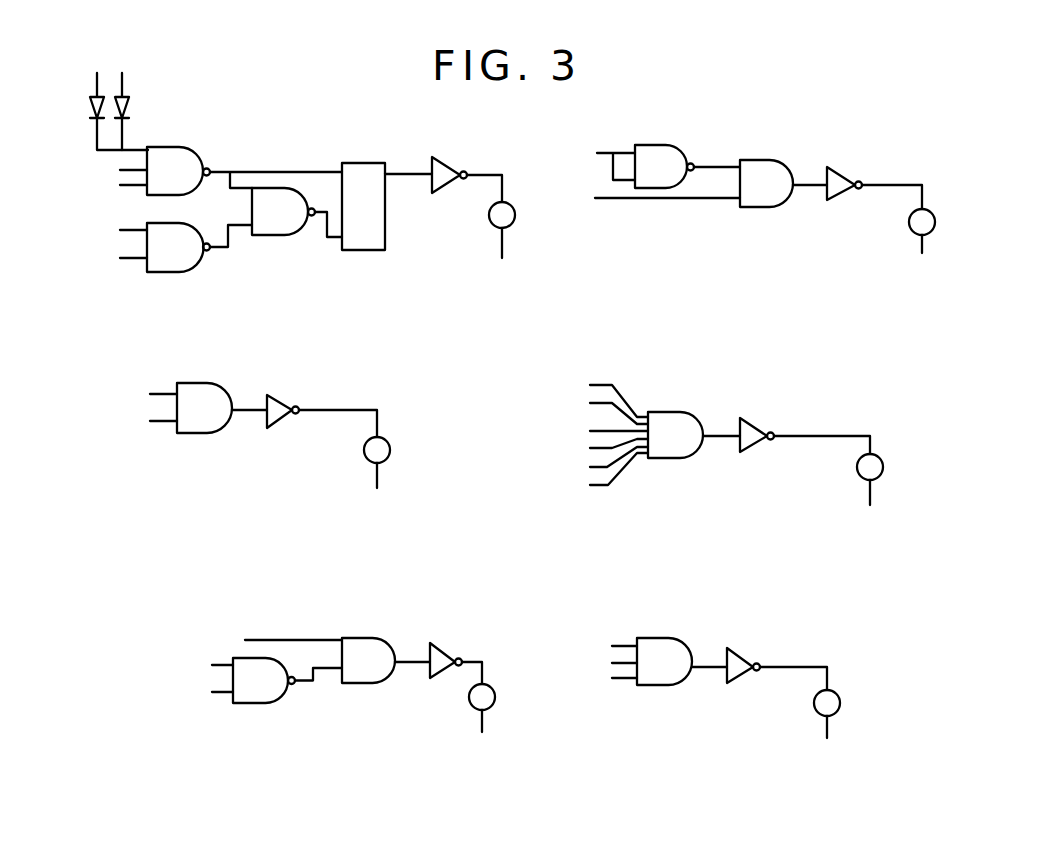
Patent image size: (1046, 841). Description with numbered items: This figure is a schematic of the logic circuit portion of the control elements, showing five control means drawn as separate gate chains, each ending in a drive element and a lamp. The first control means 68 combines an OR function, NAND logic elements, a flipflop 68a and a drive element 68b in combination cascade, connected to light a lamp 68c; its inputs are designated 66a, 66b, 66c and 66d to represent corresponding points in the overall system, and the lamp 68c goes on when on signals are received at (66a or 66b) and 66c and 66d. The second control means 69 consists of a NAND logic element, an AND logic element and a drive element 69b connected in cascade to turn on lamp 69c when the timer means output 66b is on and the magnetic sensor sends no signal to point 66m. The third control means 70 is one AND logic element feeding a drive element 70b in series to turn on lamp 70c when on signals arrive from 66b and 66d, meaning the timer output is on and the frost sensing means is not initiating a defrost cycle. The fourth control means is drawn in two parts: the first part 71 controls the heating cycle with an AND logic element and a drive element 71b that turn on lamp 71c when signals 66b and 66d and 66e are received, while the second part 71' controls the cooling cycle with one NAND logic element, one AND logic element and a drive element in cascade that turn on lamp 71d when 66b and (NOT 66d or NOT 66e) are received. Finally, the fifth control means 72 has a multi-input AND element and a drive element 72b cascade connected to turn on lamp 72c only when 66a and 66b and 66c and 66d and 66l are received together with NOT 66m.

The input point 66a is at (361, 242).
The timer means output 66b is at (410, 349).
The input point 66c is at (364, 315).
The input point 66d is at (364, 424).
The input point 66e is at (404, 685).
The input point 66l is at (596, 392).
The magnetic sensor signal point 66m is at (596, 284).
The first control means 68 is at (264, 140).
The flipflop 68a is at (363, 165).
The drive element 68b is at (447, 165).
The lamp 68c is at (488, 223).
The second control means 69 is at (718, 122).
The drive element 69b is at (842, 180).
The lamp 69c is at (908, 228).
The third control means 70 is at (378, 384).
The drive element 70b is at (280, 400).
The lamp 70c is at (387, 442).
The fourth control means, first part 71 is at (736, 661).
The drive element 71b is at (742, 658).
The lamp 71c is at (842, 703).
The fourth control means, second part 71' is at (364, 659).
The lamp 71d is at (467, 710).
The fifth control means 72 is at (818, 395).
The drive element 72b is at (749, 422).
The lamp 72c is at (880, 465).